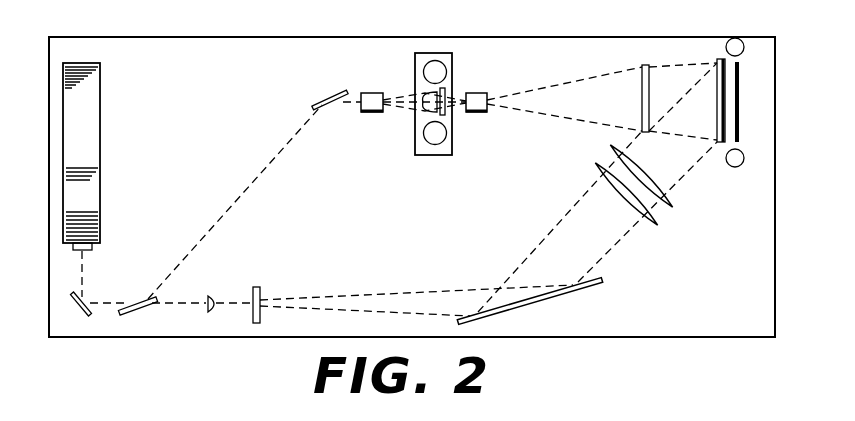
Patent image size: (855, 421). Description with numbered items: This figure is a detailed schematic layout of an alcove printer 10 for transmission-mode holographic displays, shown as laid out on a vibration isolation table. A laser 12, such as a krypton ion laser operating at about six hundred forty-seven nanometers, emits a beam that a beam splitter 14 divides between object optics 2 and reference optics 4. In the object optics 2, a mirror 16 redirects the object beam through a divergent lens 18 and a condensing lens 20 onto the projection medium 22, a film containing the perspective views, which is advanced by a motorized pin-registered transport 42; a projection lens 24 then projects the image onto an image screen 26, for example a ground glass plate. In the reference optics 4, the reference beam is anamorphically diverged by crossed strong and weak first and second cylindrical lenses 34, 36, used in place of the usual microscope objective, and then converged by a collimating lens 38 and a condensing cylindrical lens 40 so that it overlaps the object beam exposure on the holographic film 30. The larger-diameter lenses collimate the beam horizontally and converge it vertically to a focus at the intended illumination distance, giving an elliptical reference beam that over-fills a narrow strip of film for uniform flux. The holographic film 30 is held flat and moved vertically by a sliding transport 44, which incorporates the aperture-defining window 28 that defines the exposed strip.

The object optics 2 is at (321, 172).
The reference optics 4 is at (247, 275).
The alcove printer 10 is at (290, 34).
The laser 12 is at (100, 108).
The beam splitter 14 is at (140, 310).
The mirror 16 is at (324, 98).
The divergent lens 18 is at (375, 93).
The condensing lens 20 is at (425, 110).
The projection medium 22 is at (452, 146).
The projection lens 24 is at (480, 93).
The image screen 26 is at (641, 72).
The aperture-defining window 28 is at (718, 142).
The holographic film 30 is at (717, 62).
The first cylindrical lens 34 is at (208, 298).
The second cylindrical lens 36 is at (261, 290).
The collimating lens 38 is at (596, 165).
The condensing cylindrical lens 40 is at (675, 208).
The motorized pin-registered transport 42 is at (417, 146).
The sliding transport 44 is at (743, 56).